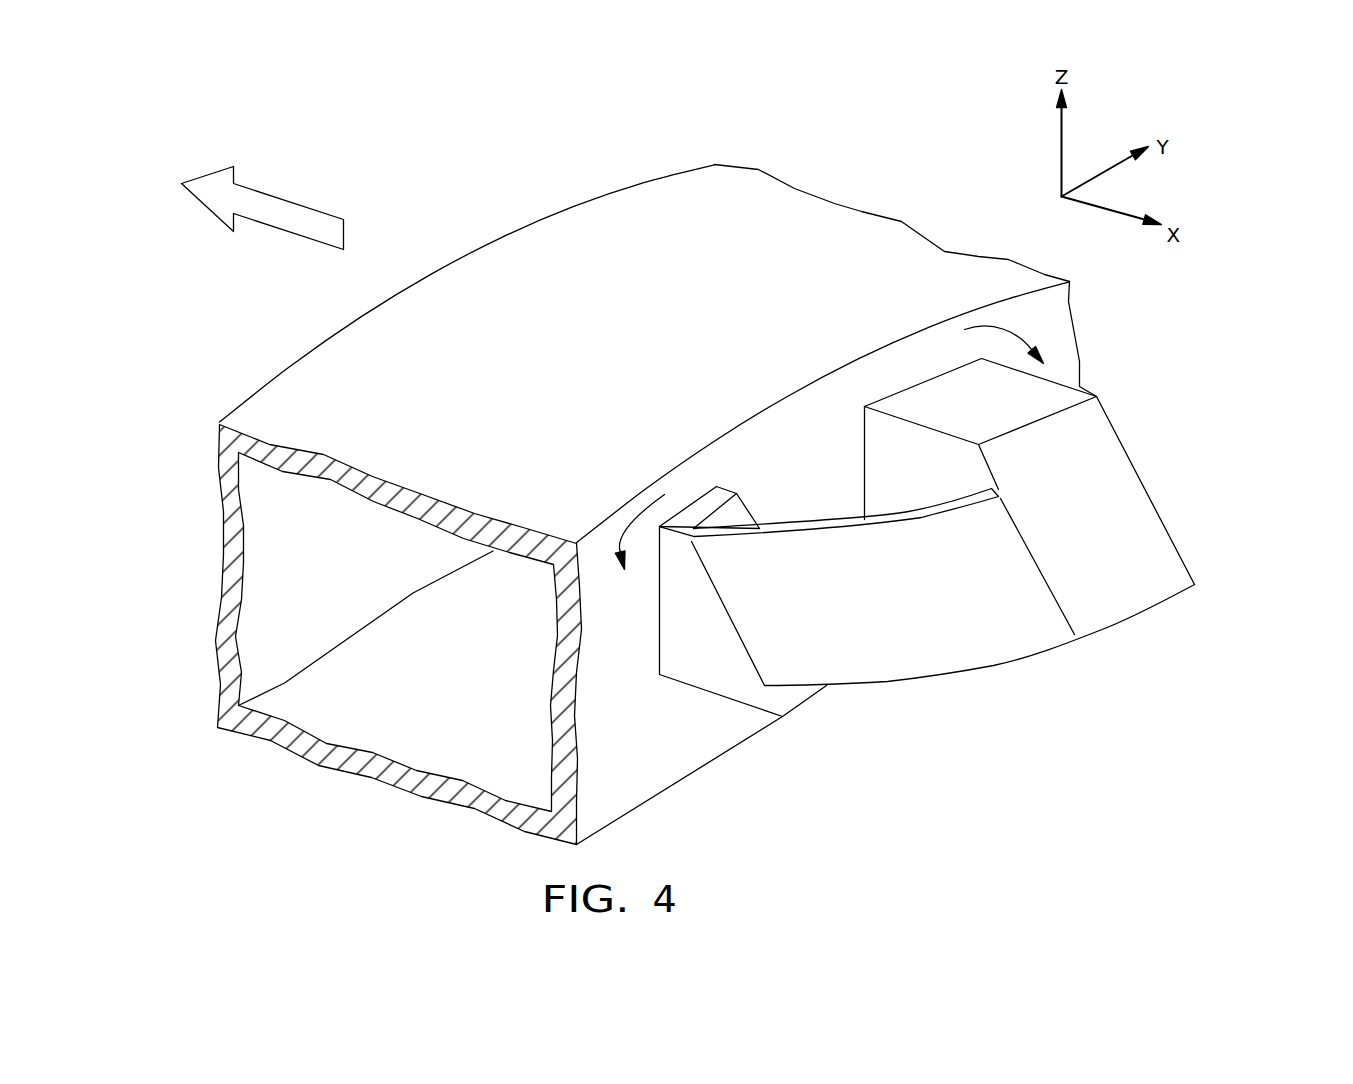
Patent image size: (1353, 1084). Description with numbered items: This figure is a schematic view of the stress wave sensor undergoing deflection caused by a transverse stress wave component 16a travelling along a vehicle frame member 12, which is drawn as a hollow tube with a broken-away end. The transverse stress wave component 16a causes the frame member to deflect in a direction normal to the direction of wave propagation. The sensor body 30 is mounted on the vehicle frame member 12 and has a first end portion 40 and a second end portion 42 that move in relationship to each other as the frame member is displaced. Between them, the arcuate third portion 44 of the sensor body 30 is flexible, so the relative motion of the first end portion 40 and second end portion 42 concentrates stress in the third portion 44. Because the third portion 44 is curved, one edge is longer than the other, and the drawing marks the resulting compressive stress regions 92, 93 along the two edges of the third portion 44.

The vehicle frame member 12 is at (822, 215).
The transverse stress wave component 16a is at (275, 227).
The sensor body 30 is at (1142, 379).
The first end portion 40 is at (735, 682).
The second end portion 42 is at (1140, 573).
The third portion 44 is at (963, 664).
The lower compressive stress region 92 is at (888, 680).
The upper compressive stress region 93 is at (823, 533).